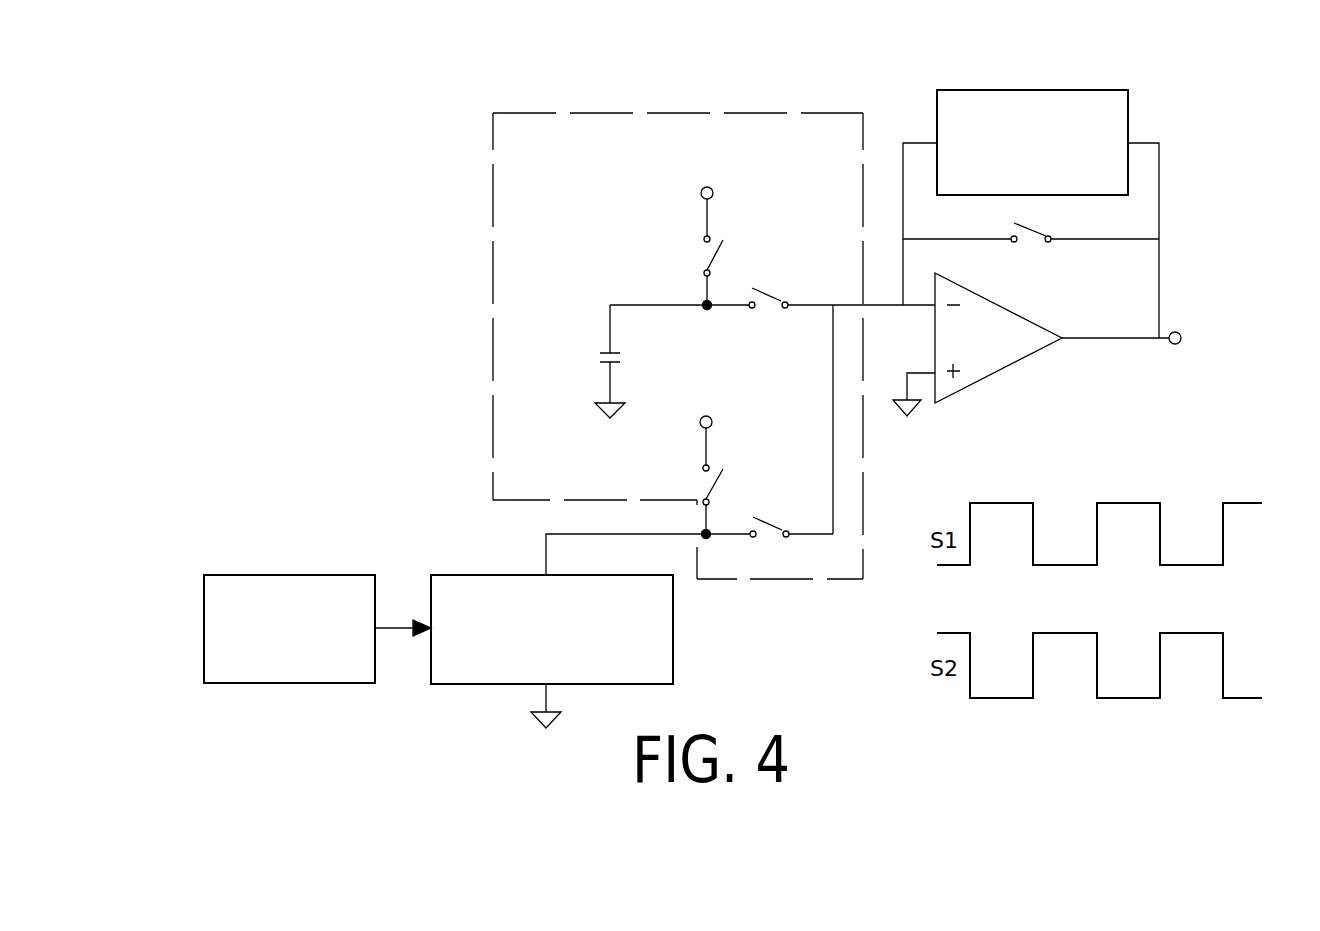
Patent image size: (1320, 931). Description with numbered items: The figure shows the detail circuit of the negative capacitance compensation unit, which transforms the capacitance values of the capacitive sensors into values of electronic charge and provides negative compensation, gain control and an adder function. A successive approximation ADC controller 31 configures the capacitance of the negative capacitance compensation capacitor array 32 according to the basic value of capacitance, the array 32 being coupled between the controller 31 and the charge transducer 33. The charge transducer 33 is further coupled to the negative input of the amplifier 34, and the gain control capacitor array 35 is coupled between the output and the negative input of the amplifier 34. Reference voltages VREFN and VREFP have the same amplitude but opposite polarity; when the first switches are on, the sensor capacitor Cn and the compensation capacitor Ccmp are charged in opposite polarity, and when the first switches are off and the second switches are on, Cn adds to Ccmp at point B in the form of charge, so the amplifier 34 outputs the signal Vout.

The successive approximation ADC controller 31 is at (254, 575).
The negative capacitance compensation capacitor array 32 is at (673, 650).
The charge transducer 33 is at (493, 182).
The amplifier 34 is at (1007, 367).
The gain control capacitor array 35 is at (1128, 102).